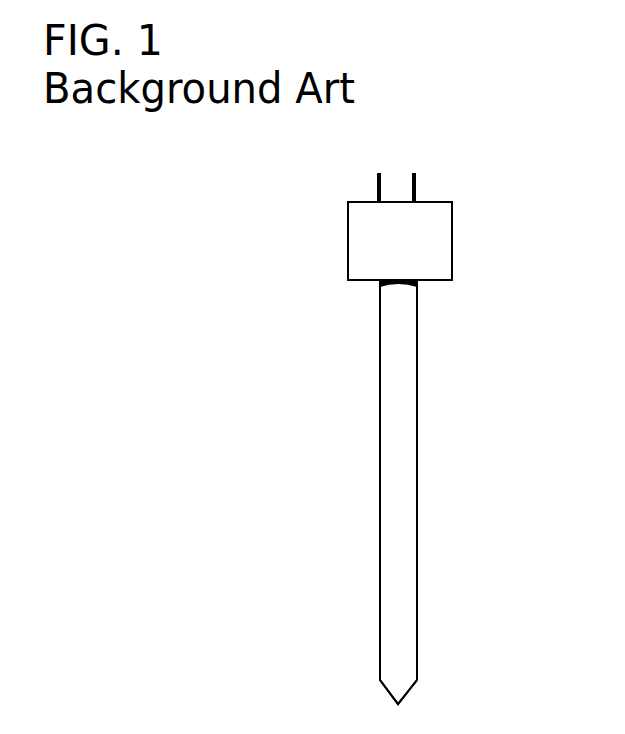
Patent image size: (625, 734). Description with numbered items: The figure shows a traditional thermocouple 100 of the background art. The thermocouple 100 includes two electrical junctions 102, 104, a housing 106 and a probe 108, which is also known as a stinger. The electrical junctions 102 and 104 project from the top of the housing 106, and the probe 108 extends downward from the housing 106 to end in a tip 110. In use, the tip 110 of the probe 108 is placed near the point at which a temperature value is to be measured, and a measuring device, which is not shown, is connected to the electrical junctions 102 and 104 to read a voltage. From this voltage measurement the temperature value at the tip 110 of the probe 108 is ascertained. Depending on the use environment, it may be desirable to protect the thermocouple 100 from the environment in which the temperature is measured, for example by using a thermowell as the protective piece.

The thermocouple 100 is at (127, 174).
The electrical junction 102 is at (379, 173).
The electrical junction 104 is at (414, 175).
The housing 106 is at (452, 237).
The probe 108 is at (410, 492).
The tip 110 is at (408, 692).